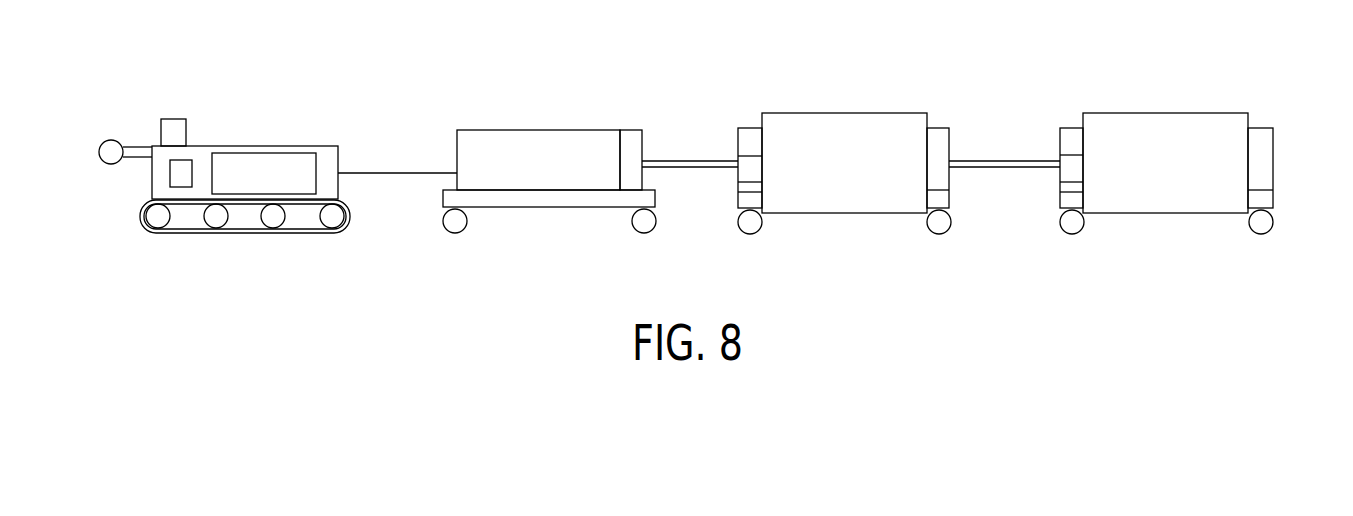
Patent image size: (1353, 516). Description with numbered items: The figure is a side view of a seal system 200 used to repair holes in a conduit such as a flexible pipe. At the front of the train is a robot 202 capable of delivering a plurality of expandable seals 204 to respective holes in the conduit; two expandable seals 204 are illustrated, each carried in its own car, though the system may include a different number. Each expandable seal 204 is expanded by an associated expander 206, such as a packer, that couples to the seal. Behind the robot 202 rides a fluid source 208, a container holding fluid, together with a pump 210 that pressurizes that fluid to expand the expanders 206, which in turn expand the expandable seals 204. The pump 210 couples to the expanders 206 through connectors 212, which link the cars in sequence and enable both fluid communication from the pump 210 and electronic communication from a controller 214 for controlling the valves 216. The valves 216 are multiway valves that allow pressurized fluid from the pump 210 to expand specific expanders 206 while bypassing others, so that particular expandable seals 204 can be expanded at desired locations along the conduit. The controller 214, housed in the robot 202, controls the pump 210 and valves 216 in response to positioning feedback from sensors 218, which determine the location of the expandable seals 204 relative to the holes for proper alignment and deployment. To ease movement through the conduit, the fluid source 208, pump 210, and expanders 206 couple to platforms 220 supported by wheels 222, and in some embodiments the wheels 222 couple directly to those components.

The seal system 200 is at (918, 52).
The robot 202 is at (238, 121).
The expandable seal 204 is at (845, 113).
The expander 206 is at (940, 147).
The fluid source 208 is at (515, 148).
The pump 210 is at (630, 130).
The connector 212 is at (693, 168).
The controller 214 is at (263, 152).
The valve 216 is at (748, 150).
The sensor 218 is at (162, 130).
The platform 220 is at (545, 198).
The wheel 222 is at (450, 223).